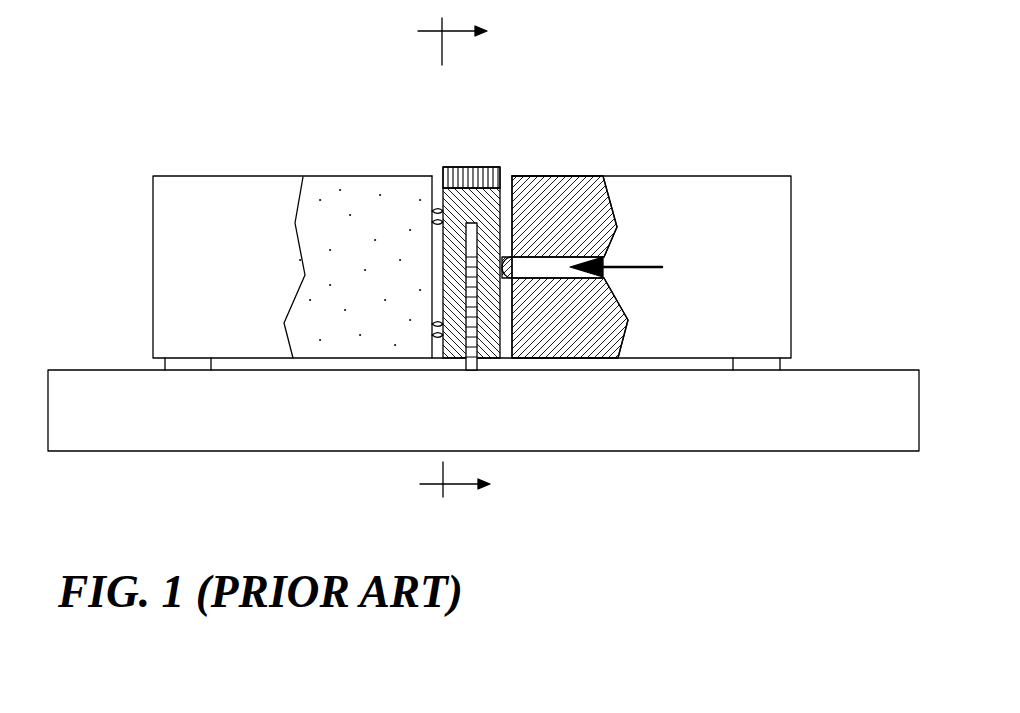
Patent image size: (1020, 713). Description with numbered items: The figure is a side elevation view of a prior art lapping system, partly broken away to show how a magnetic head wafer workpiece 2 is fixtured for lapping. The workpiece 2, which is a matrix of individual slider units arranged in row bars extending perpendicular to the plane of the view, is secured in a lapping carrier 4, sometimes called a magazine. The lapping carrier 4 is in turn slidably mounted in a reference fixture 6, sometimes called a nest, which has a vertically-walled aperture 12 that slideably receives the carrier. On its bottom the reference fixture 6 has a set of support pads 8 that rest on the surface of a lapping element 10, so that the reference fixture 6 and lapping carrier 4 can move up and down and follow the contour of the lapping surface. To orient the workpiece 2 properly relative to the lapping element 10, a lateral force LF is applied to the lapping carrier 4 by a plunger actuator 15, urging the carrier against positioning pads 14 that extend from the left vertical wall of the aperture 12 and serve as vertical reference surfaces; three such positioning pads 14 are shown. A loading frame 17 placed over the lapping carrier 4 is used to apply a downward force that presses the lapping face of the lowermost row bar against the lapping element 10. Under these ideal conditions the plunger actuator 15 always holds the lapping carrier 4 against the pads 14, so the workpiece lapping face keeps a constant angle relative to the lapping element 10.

The workpiece 2 is at (529, 313).
The lapping carrier 4 is at (485, 222).
The reference fixture 6 is at (695, 176).
The support pads 8 is at (178, 365).
The lapping element 10 is at (888, 370).
The vertically-walled aperture 12 is at (501, 88).
The positioning pads 14 is at (443, 215).
The plunger actuator 15 is at (593, 257).
The loading frame 17 is at (466, 164).
The lateral force LF is at (601, 267).